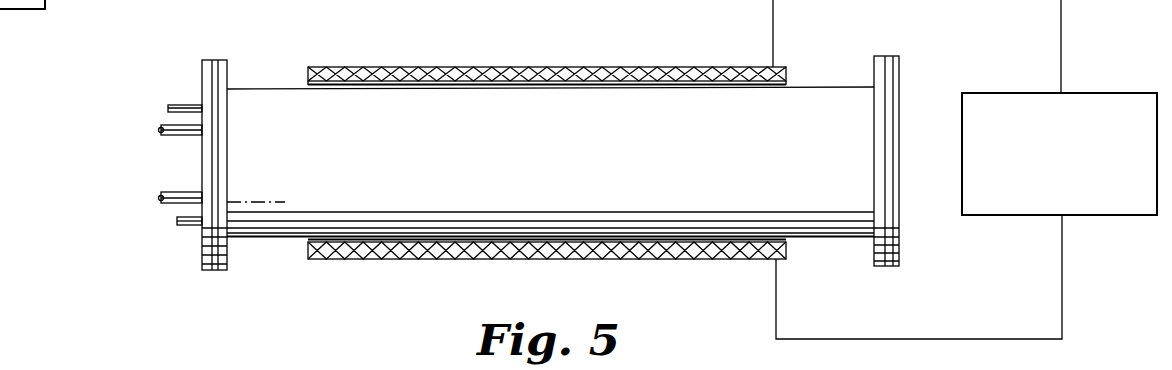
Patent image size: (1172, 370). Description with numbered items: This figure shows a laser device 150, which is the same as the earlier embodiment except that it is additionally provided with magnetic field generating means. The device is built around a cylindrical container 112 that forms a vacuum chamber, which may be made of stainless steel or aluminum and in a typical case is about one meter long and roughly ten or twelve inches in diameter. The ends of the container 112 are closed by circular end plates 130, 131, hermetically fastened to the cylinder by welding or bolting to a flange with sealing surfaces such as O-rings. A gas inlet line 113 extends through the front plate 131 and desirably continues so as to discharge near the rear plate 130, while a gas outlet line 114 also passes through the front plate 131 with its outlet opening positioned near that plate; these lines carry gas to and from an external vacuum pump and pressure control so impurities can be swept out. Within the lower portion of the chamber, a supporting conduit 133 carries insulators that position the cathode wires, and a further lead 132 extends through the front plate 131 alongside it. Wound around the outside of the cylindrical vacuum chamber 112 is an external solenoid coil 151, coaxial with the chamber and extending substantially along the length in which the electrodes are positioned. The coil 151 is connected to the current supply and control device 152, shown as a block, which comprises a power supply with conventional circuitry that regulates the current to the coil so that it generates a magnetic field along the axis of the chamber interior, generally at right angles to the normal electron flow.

The cylindrical container 112 is at (797, 104).
The gas inlet line 113 is at (179, 103).
The gas outlet line 114 is at (186, 224).
The rear end plate 130 is at (890, 56).
The front end plate 131 is at (211, 60).
The lead pin 132 is at (166, 130).
The supporting conduit 133 is at (166, 195).
The laser device 150 is at (522, 65).
The external solenoid coil 151 is at (430, 67).
The current supply and control device for the magnetic coil 152 is at (1112, 93).